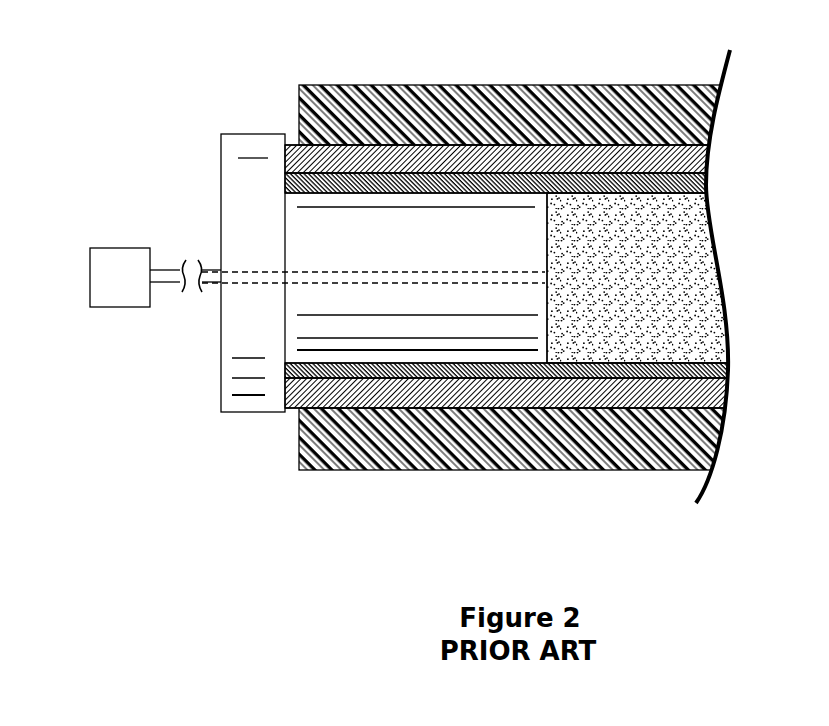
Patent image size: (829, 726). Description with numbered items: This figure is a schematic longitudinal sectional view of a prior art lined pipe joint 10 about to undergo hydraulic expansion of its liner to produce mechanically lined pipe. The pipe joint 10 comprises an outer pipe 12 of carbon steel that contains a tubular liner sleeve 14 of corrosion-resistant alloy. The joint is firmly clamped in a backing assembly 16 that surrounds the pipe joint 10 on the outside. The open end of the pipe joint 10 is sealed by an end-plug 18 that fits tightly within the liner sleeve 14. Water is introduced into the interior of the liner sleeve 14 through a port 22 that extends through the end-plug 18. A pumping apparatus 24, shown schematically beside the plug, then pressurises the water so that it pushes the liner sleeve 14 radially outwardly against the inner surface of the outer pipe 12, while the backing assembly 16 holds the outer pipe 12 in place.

The lined pipe joint 10 is at (190, 80).
The outer pipe 12 is at (418, 383).
The tubular liner sleeve 14 is at (607, 363).
The backing assembly 16 is at (352, 90).
The end-plug 18 is at (240, 193).
The port 22 is at (240, 293).
The pumping apparatus 24 is at (90, 252).